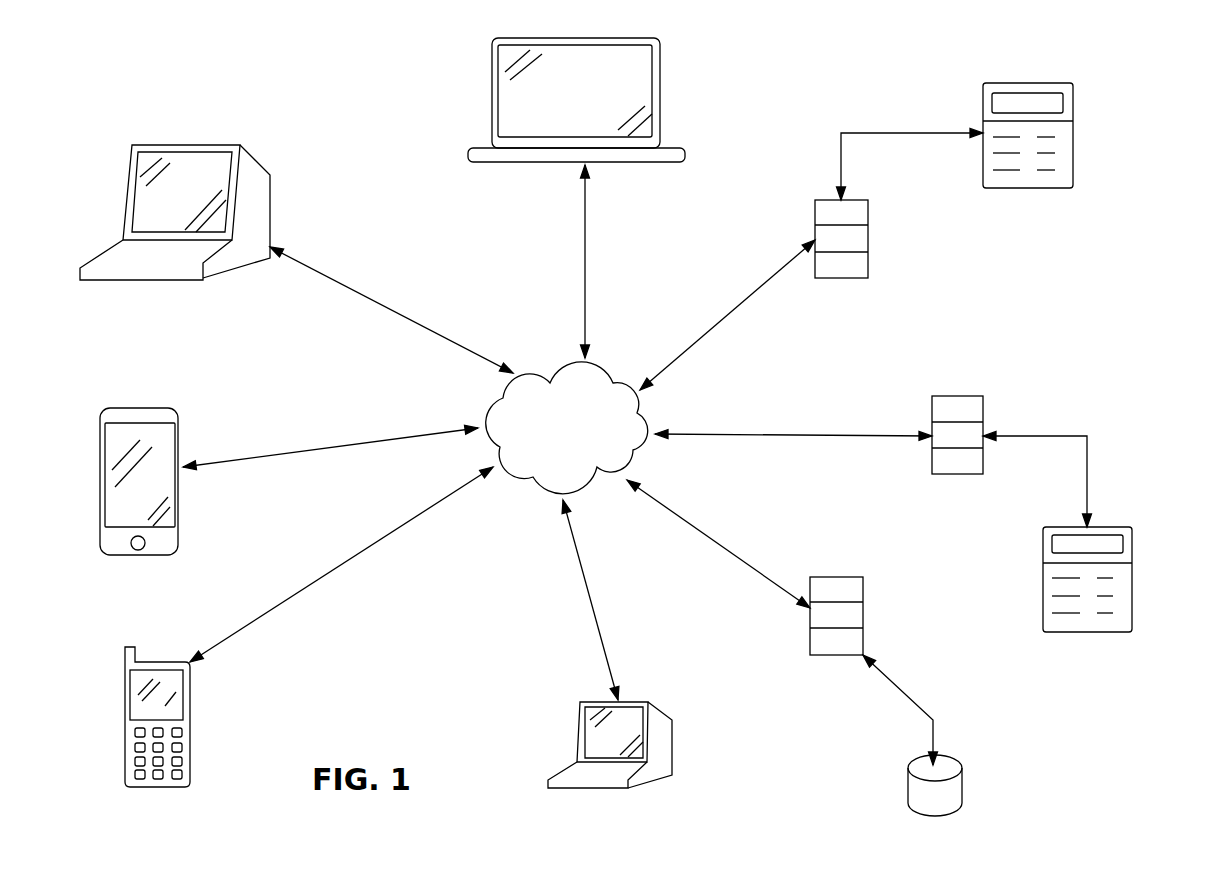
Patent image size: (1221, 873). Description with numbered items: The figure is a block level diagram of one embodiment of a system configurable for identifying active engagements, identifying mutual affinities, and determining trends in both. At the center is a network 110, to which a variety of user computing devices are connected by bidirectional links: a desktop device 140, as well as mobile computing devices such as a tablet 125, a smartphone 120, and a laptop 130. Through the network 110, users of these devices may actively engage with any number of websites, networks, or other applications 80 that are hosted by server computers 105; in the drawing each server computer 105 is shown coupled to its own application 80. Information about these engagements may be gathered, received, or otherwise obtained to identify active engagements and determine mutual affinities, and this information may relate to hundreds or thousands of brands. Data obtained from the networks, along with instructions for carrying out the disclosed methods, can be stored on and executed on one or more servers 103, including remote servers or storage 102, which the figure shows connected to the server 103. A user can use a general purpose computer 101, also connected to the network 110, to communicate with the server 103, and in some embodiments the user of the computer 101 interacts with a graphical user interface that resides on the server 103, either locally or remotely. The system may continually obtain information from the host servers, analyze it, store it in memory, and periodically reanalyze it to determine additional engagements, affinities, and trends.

The network 110 is at (550, 441).
The laptop 130 is at (663, 97).
The desktop device 140 is at (270, 215).
The tablet 125 is at (180, 433).
The smartphone 120 is at (190, 727).
The general purpose computer 101 is at (673, 752).
The server computer 105 is at (868, 268).
The application 80 is at (1075, 125).
The server 103 is at (865, 590).
The remote server or storage 102 is at (962, 793).